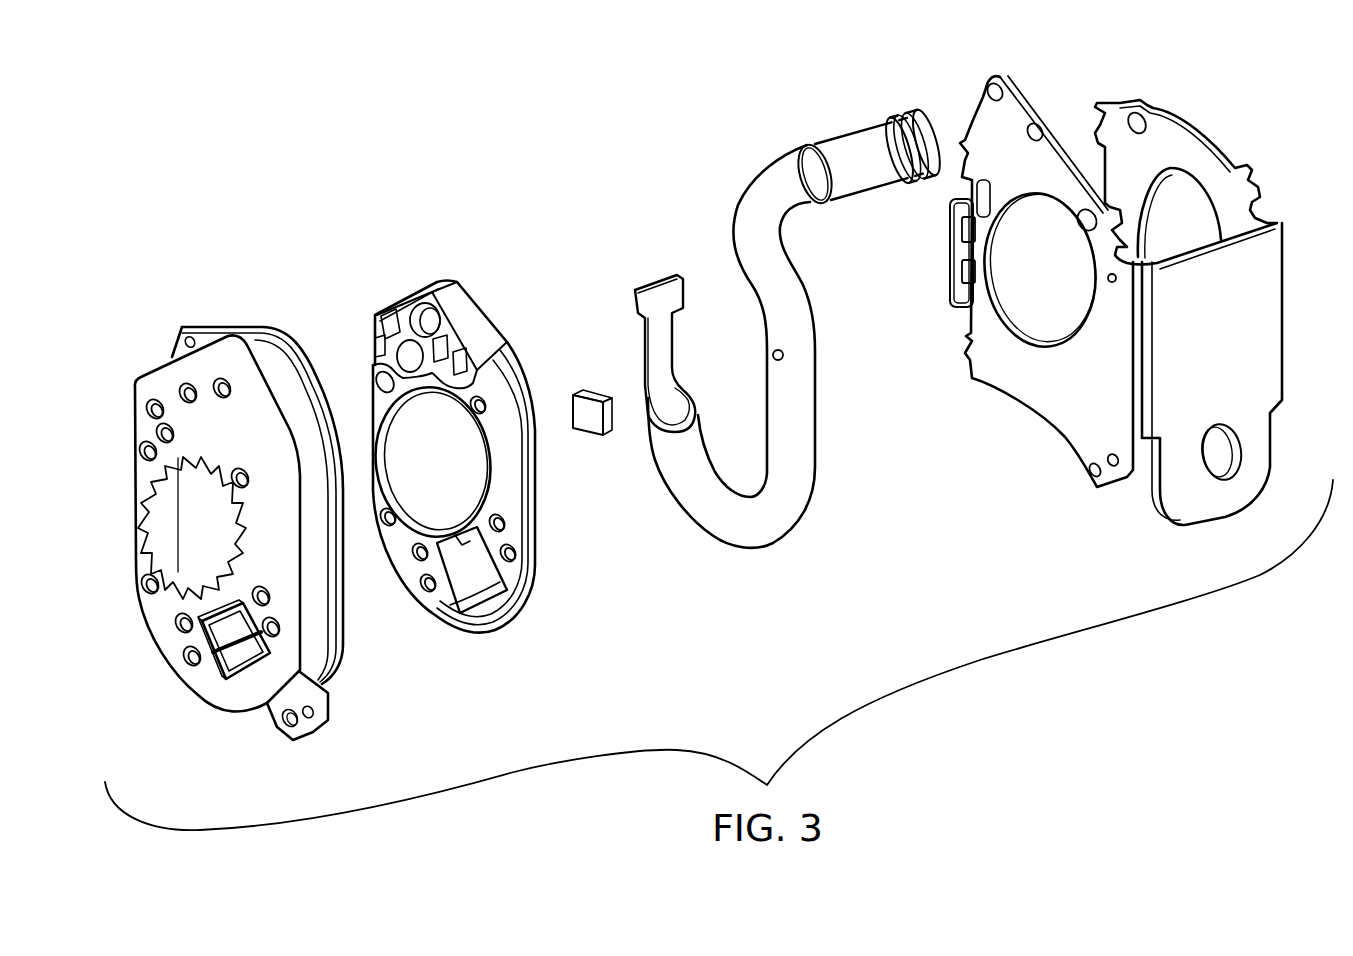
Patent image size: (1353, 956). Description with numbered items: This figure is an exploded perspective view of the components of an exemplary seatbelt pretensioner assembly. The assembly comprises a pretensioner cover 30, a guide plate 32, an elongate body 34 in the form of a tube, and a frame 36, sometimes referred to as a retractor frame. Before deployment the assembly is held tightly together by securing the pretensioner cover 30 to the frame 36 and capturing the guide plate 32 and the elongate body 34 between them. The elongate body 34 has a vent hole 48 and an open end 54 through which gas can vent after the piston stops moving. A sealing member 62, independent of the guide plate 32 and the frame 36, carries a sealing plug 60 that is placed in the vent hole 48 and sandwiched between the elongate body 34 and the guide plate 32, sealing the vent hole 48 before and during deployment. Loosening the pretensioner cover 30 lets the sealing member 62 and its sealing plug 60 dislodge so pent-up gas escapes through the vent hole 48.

The pretensioner cover 30 is at (210, 318).
The guide plate 32 is at (423, 270).
The elongate body 34 is at (820, 128).
The frame 36 is at (1208, 115).
The vent hole 48 is at (784, 367).
The open end 54 is at (676, 408).
The sealing plug 60 is at (1109, 287).
The sealing member 62 is at (590, 388).